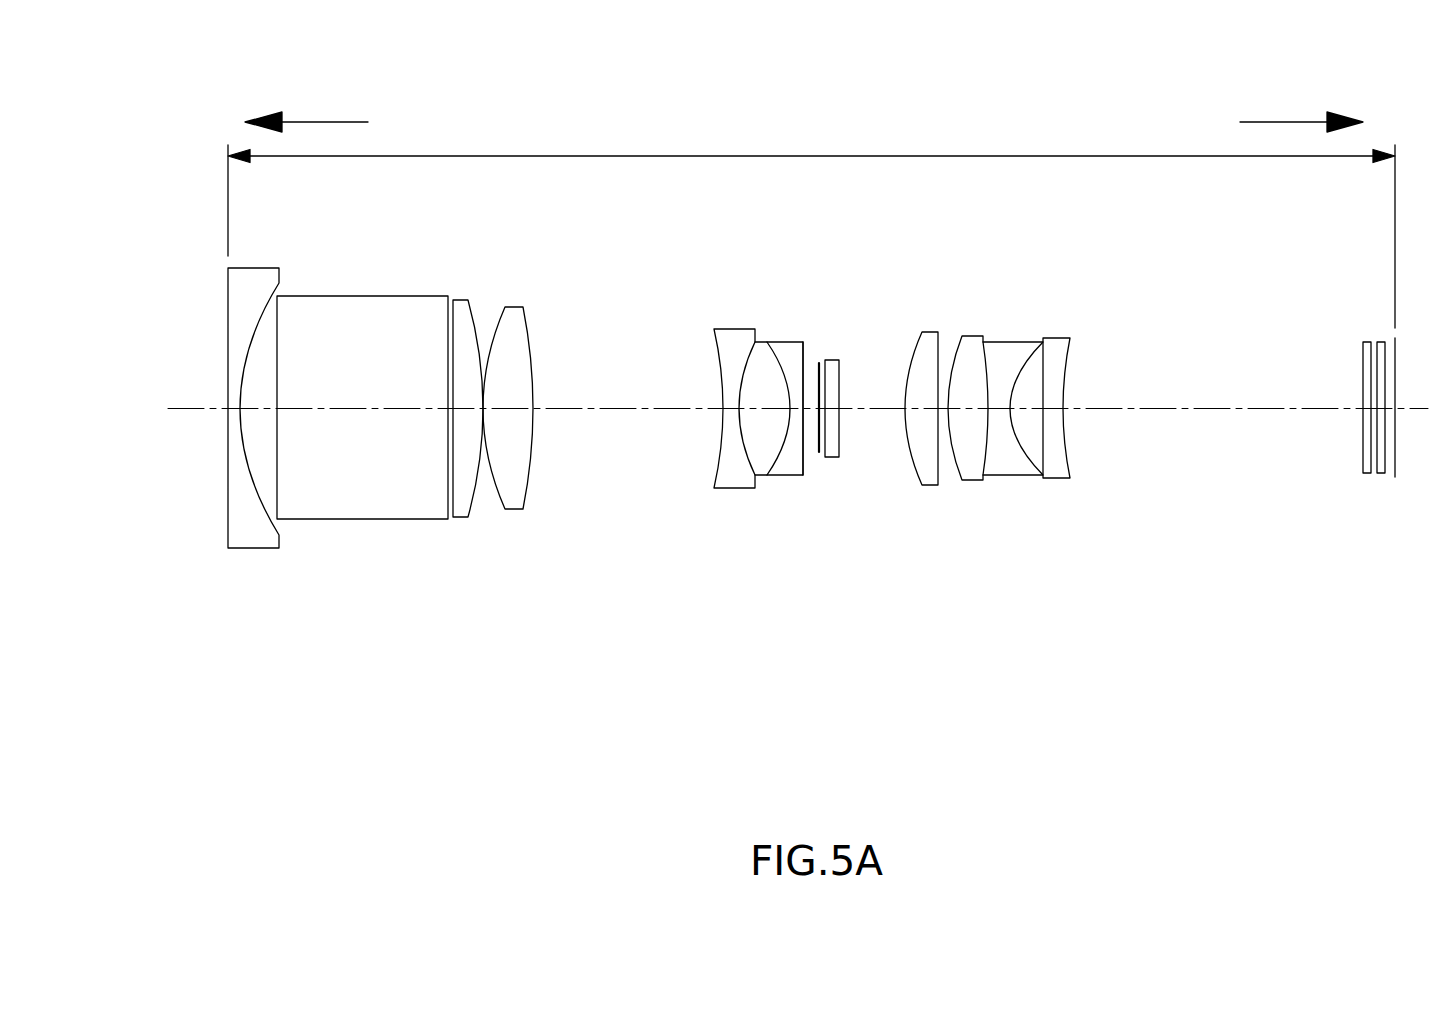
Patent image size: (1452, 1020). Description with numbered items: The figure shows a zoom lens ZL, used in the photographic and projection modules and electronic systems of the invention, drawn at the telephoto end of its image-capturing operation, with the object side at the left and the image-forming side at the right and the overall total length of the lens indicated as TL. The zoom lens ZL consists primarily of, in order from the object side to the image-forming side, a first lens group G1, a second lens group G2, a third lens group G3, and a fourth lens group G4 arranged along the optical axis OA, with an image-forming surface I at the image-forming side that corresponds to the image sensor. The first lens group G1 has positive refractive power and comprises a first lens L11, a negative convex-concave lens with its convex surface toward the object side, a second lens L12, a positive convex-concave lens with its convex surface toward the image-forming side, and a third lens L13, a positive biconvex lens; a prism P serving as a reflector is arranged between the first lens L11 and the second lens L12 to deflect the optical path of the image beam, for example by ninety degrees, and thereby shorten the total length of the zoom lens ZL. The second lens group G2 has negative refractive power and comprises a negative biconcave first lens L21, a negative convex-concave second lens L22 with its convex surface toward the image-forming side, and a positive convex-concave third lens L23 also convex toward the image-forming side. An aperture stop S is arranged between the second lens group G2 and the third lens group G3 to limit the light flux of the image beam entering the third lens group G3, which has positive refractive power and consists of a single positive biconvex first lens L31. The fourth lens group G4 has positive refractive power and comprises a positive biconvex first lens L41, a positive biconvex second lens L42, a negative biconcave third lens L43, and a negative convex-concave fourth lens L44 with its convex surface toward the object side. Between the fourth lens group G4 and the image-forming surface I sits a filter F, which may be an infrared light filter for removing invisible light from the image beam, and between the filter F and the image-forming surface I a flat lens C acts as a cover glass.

The zoom lens ZL is at (175, 71).
The total length of the zoom lens TL is at (811, 236).
The optical axis OA is at (185, 407).
The first lens group G1 is at (583, 620).
The first lens L11 is at (258, 548).
The prism P is at (328, 519).
The second lens L12 is at (457, 517).
The third lens L13 is at (515, 509).
The second lens group G2 is at (860, 552).
The first lens L21 is at (725, 488).
The second lens L22 is at (760, 475).
The third lens L23 is at (792, 475).
The stop S is at (812, 366).
The third lens group G3 is at (898, 297).
The first lens L31 is at (838, 368).
The fourth lens group G4 is at (1102, 552).
The first lens L41 is at (930, 485).
The second lens L42 is at (973, 480).
The third lens L43 is at (1018, 475).
The fourth lens L44 is at (1067, 478).
The filter F is at (1365, 460).
The flat lens C is at (1380, 473).
The image-forming surface I is at (1397, 460).